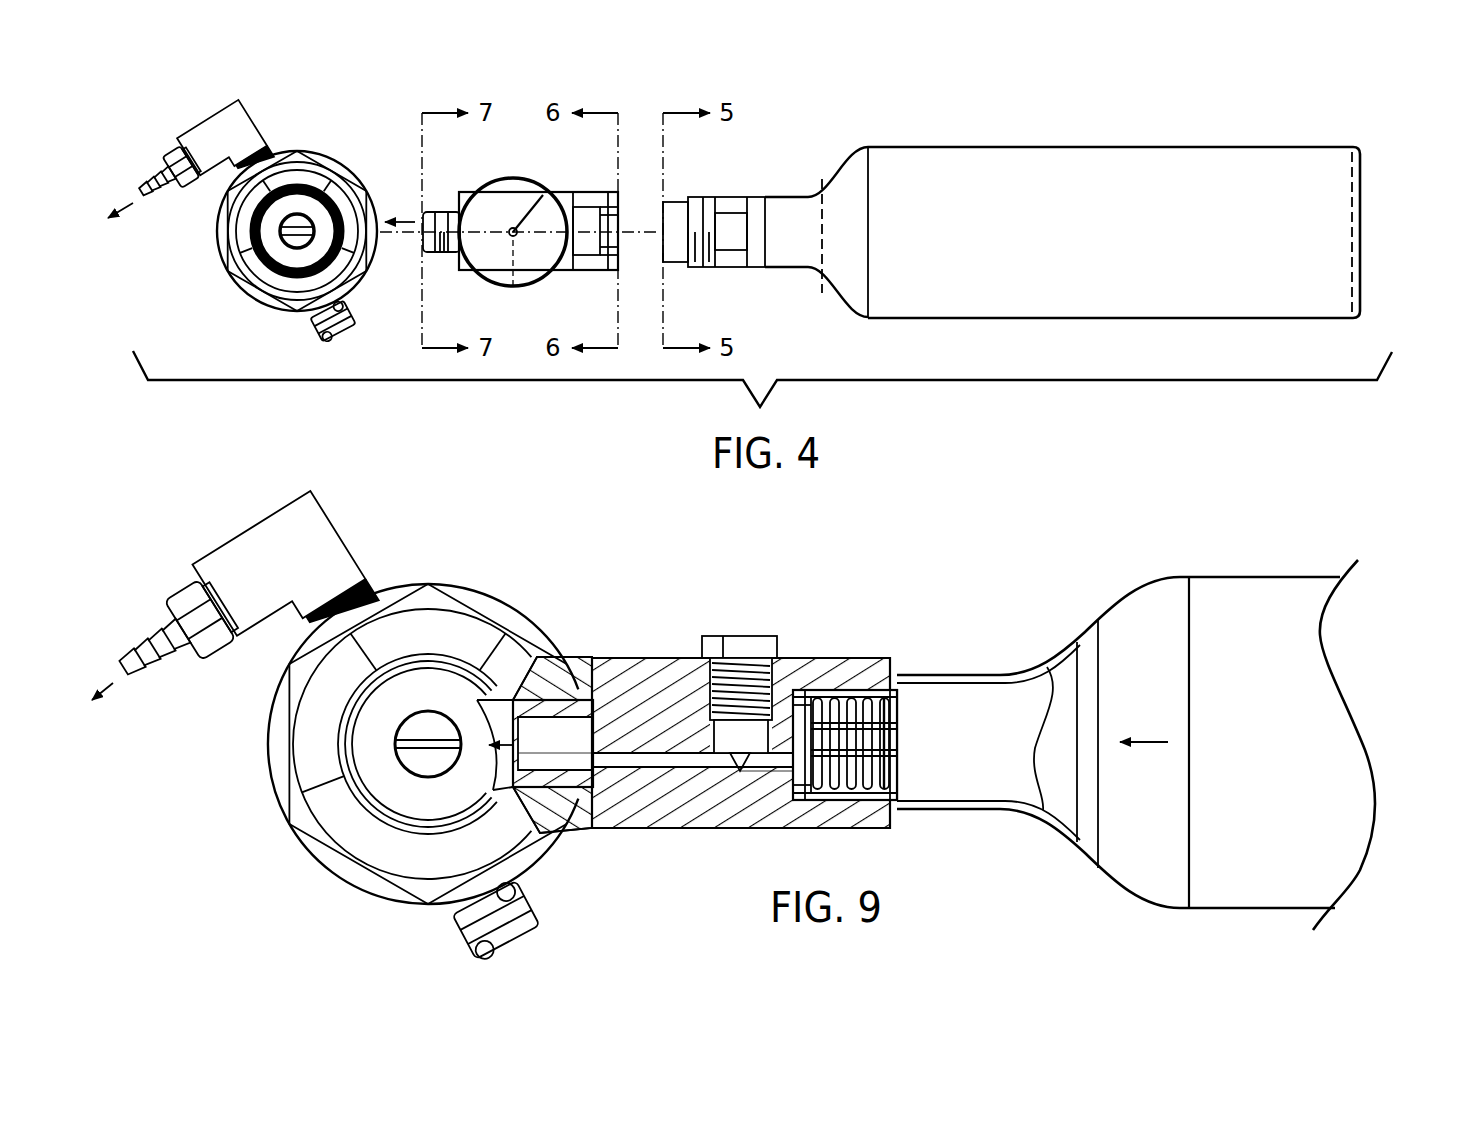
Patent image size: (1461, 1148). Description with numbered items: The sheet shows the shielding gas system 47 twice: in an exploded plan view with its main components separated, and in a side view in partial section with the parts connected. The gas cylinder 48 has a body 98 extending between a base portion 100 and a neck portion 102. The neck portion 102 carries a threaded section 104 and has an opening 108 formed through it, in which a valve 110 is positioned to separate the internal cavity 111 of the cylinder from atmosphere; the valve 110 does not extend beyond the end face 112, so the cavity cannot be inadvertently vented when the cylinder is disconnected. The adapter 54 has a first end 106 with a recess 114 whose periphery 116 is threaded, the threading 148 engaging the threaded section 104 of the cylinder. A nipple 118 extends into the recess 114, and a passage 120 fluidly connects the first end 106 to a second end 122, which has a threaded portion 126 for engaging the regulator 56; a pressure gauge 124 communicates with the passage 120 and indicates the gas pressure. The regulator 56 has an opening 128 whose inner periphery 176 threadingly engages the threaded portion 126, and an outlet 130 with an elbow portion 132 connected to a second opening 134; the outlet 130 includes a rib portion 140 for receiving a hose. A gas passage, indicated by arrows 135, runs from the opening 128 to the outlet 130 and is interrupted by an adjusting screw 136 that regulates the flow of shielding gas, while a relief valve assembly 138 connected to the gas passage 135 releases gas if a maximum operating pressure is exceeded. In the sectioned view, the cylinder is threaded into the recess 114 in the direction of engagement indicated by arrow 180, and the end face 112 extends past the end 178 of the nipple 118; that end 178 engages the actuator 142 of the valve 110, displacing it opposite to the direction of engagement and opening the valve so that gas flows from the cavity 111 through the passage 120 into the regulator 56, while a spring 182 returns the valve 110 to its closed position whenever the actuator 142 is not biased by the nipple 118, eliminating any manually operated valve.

In FIG. 4, the shielding gas system 47 is at (878, 90).
In FIG. 4, the gas cylinder 48 is at (1095, 110).
In FIG. 9, the gas cylinder 48 is at (1245, 649).
In FIG. 4, the adapter 54 is at (545, 185).
In FIG. 9, the adapter 54 is at (797, 640).
In FIG. 4, the regulator 56 is at (318, 148).
In FIG. 9, the regulator 56 is at (507, 592).
In FIG. 4, the body 98 is at (1085, 212).
In FIG. 4, the base portion 100 is at (1358, 130).
In FIG. 4, the neck portion 102 is at (812, 150).
In FIG. 9, the neck portion 102 is at (1022, 660).
In FIG. 4, the threaded section 104 is at (700, 198).
In FIG. 9, the threaded section 104 is at (898, 688).
In FIG. 4, the first end 106 is at (608, 215).
In FIG. 9, the first end 106 is at (840, 645).
In FIG. 4, the opening 108 is at (658, 255).
In FIG. 4, the valve 110 is at (660, 222).
In FIG. 9, the valve 110 is at (848, 825).
In FIG. 4, the internal cavity 111 is at (944, 208).
In FIG. 9, the internal cavity 111 is at (997, 725).
In FIG. 4, the end face 112 is at (675, 250).
In FIG. 9, the end face 112 is at (792, 802).
In FIG. 4, the recess 114 is at (612, 198).
In FIG. 9, the recess 114 is at (888, 812).
In FIG. 4, the periphery 116 is at (600, 270).
In FIG. 9, the periphery 116 is at (880, 688).
In FIG. 4, the nipple 118 is at (571, 200).
In FIG. 9, the nipple 118 is at (780, 772).
In FIG. 4, the passage 120 is at (497, 289).
In FIG. 9, the passage 120 is at (663, 762).
In FIG. 4, the second end 122 is at (432, 252).
In FIG. 4, the pressure gauge 124 is at (522, 195).
In FIG. 9, the pressure gauge 124 is at (737, 645).
In FIG. 4, the threaded portion 126 is at (440, 208).
In FIG. 9, the threaded portion 126 is at (556, 780).
In FIG. 4, the opening 128 is at (345, 270).
In FIG. 9, the opening 128 is at (550, 663).
In FIG. 4, the outlet 130 is at (183, 142).
In FIG. 4, the elbow portion 132 is at (206, 116).
In FIG. 4, the second opening 134 is at (268, 150).
In FIG. 4, the gas passage 135 is at (120, 210).
In FIG. 9, the gas passage 135 is at (503, 740).
In FIG. 4, the adjusting screw 136 is at (293, 246).
In FIG. 4, the relief valve assembly 138 is at (343, 338).
In FIG. 4, the rib portion 140 is at (165, 176).
In FIG. 9, the actuator 142 is at (897, 727).
In FIG. 9, the threading 148 is at (848, 668).
In FIG. 9, the inner periphery 176 is at (560, 790).
In FIG. 9, the end 178 is at (897, 752).
In FIG. 9, the arrow 180 is at (1146, 744).
In FIG. 9, the spring 182 is at (897, 772).